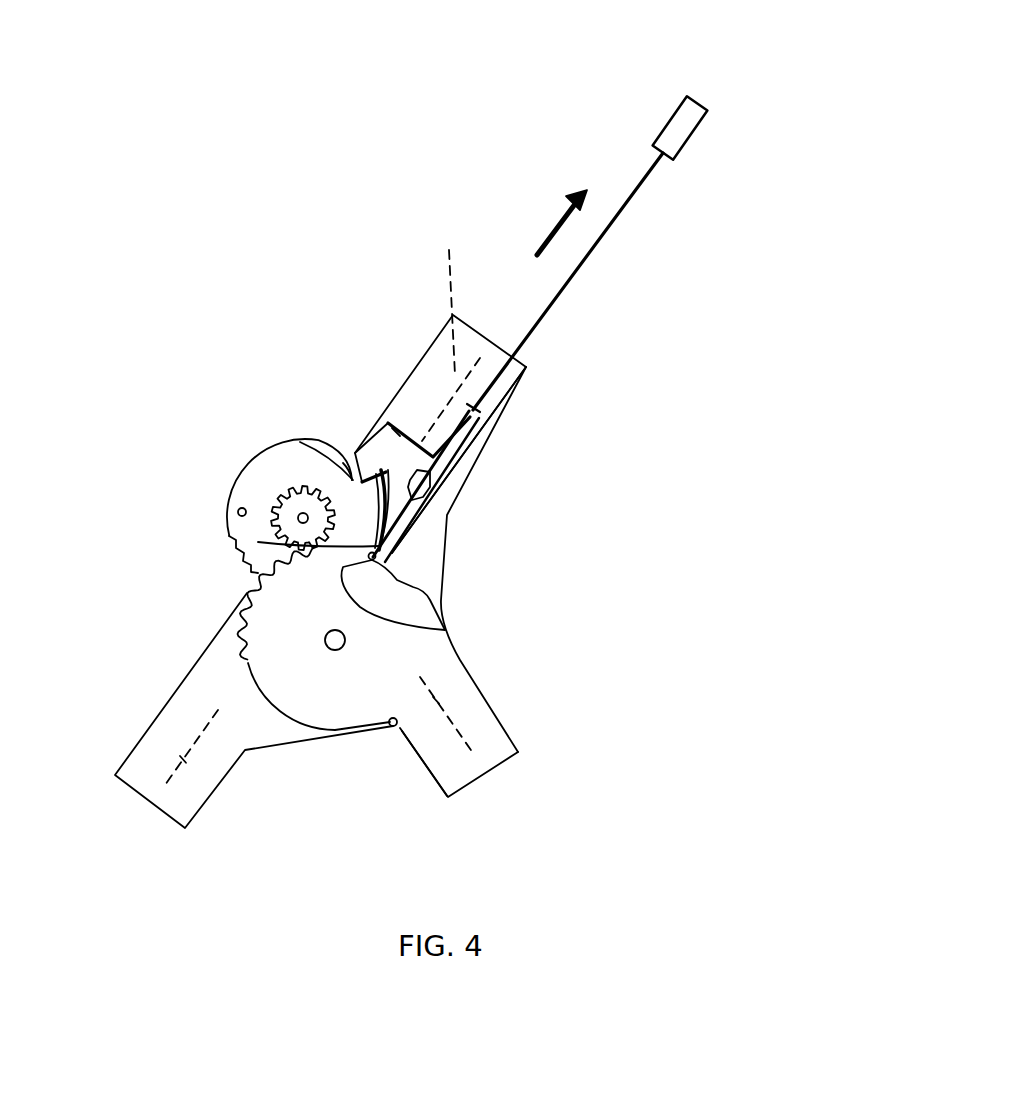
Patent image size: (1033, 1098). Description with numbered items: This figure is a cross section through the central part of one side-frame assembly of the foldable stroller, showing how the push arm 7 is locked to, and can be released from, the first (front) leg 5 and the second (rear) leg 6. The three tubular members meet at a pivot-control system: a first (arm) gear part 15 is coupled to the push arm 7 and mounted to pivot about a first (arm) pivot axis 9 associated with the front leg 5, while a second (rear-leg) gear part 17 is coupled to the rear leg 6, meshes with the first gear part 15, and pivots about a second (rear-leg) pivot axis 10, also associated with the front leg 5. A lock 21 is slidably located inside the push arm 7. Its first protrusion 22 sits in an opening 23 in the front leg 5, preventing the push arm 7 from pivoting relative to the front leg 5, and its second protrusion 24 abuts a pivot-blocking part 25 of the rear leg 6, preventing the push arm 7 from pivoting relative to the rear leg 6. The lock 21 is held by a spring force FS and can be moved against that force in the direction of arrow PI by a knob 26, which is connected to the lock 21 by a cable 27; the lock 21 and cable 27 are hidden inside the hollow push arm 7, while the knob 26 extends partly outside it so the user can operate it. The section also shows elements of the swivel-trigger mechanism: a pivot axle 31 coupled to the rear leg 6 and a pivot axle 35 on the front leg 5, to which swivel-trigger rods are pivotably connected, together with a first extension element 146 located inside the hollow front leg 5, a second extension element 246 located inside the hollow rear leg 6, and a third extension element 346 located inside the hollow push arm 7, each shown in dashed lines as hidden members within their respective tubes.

The first (front) leg 5 is at (287, 459).
The second (rear) leg 6 is at (490, 735).
The push arm 7 is at (418, 445).
The first (arm) pivot axis 9 is at (298, 521).
The second (rear-leg) pivot axis 10 is at (333, 645).
The first (arm) gear part 15 is at (276, 494).
The second (rear-leg) gear part 17 is at (242, 603).
The lock 21 is at (385, 476).
The first protrusion 22 is at (384, 422).
The opening 23 is at (352, 480).
The second protrusion 24 is at (373, 545).
The pivot-blocking part 25 is at (445, 630).
The knob 26 is at (680, 120).
The cable 27 is at (588, 283).
The pivot axle 31 is at (392, 727).
The pivot axle 35 is at (238, 512).
The first extension element 146 is at (155, 745).
The second extension element 246 is at (440, 700).
The third extension element 346 is at (451, 330).
The arrow P1 PI is at (547, 233).
The spring force Fs FS is at (522, 364).